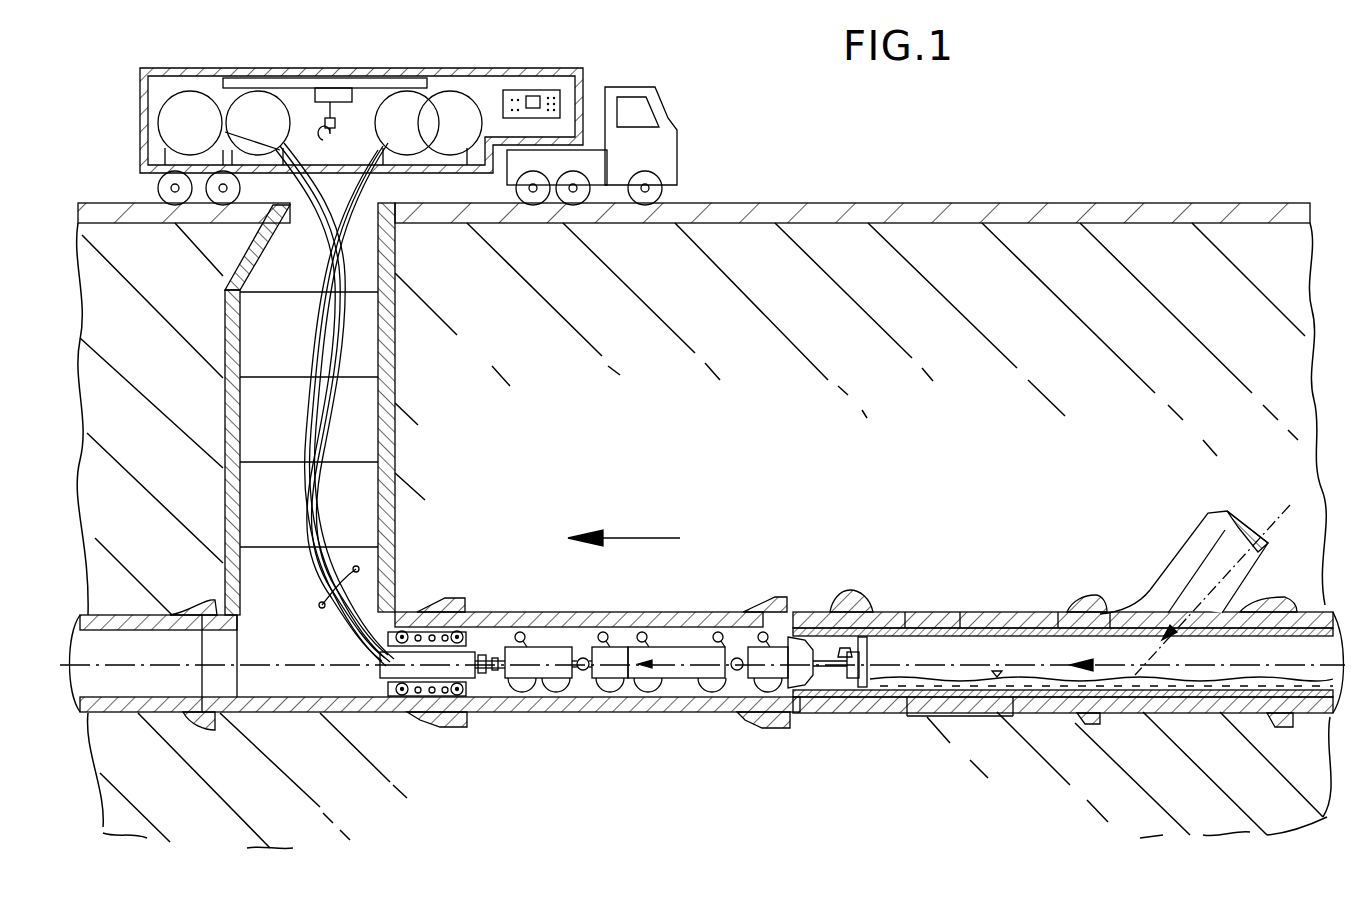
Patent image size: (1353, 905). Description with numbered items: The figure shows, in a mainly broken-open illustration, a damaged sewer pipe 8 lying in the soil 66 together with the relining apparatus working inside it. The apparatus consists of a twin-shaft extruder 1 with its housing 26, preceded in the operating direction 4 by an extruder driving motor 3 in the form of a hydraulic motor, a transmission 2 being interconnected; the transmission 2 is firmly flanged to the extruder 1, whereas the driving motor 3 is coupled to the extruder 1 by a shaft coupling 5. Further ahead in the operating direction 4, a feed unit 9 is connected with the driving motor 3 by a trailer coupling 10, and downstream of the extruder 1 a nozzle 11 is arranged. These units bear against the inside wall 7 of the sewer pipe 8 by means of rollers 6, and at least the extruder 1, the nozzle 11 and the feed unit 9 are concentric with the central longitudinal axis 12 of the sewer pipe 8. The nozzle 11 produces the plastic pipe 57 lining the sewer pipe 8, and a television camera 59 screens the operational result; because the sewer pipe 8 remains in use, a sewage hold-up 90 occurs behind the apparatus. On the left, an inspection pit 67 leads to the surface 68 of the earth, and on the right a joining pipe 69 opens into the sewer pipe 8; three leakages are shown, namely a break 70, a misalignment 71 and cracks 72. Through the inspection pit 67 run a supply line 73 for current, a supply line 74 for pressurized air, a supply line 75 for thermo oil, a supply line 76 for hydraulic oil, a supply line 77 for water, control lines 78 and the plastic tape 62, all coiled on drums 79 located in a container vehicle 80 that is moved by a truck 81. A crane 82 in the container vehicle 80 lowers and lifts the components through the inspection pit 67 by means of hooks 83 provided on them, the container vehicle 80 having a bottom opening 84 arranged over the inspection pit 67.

The twin-shaft extruder 1 is at (683, 673).
The transmission 2 is at (612, 673).
The extruder driving motor 3 is at (537, 673).
The operating direction 4 is at (630, 538).
The shaft coupling 5 is at (583, 670).
The rollers 6 is at (648, 690).
The inside wall 7 is at (333, 690).
The sewer pipe 8 is at (263, 700).
The feed unit 9 is at (415, 658).
The trailer coupling 10 is at (497, 670).
The nozzle 11 is at (780, 673).
The central longitudinal axis 12 is at (113, 666).
The housing 26 is at (670, 650).
The plastic pipe 57 is at (977, 628).
The television camera 59 is at (851, 680).
The plastic tape 62 is at (300, 423).
The soil 66 is at (923, 275).
The inspection pit 67 is at (380, 353).
The surface of the earth 68 is at (1080, 203).
The joining pipe 69 is at (1200, 540).
The break 70 is at (850, 600).
The misalignment 71 is at (937, 615).
The cracks 72 is at (1058, 620).
The supply line for current 73 is at (302, 498).
The supply line for pressurized air 74 is at (302, 532).
The supply line for thermo oil 75 is at (312, 577).
The supply line for hydraulic oil 76 is at (322, 418).
The supply line for water 77 is at (318, 483).
The control lines 78 is at (318, 520).
The drums 79 is at (247, 110).
The container vehicle 80 is at (498, 68).
The truck 81 is at (628, 90).
The crane 82 is at (323, 88).
The hooks 83 is at (520, 632).
The bottom opening 84 is at (340, 167).
The sewage hold-up 90 is at (912, 680).